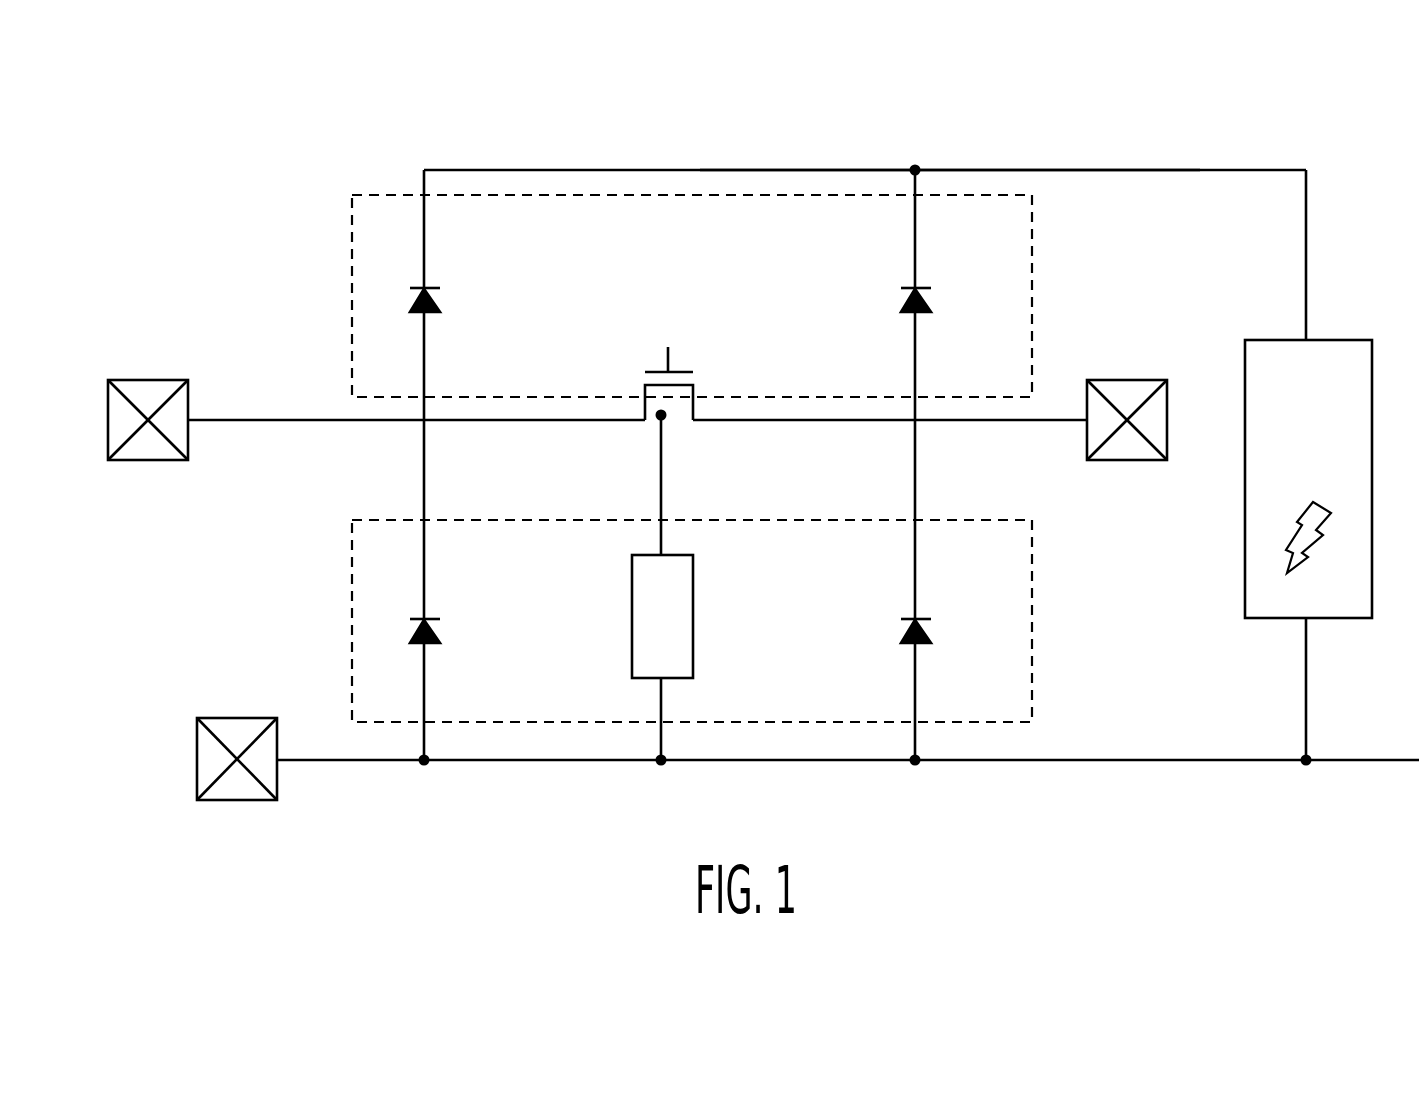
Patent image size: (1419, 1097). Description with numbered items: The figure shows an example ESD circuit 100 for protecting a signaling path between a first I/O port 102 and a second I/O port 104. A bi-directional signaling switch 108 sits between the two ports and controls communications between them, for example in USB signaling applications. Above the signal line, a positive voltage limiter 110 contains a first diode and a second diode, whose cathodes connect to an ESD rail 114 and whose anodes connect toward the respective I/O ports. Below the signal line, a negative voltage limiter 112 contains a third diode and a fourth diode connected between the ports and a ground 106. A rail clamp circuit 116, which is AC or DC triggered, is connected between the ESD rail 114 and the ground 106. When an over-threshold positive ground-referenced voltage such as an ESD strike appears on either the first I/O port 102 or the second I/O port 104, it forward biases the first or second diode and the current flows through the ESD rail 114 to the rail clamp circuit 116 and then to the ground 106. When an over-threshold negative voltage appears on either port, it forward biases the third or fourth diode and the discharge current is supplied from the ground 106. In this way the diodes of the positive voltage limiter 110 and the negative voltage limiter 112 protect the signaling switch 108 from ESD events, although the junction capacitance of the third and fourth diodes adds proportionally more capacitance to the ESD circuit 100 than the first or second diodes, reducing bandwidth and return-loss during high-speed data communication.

The ESD circuit 100 is at (146, 181).
The first I/O port 102 is at (190, 437).
The second I/O port 104 is at (1122, 461).
The ground 106 is at (196, 752).
The signaling switch 108 is at (682, 372).
The positive voltage limiter 110 is at (352, 244).
The negative voltage limiter 112 is at (352, 592).
The ESD rail 114 is at (1005, 170).
The rail clamp circuit 116 is at (1245, 562).